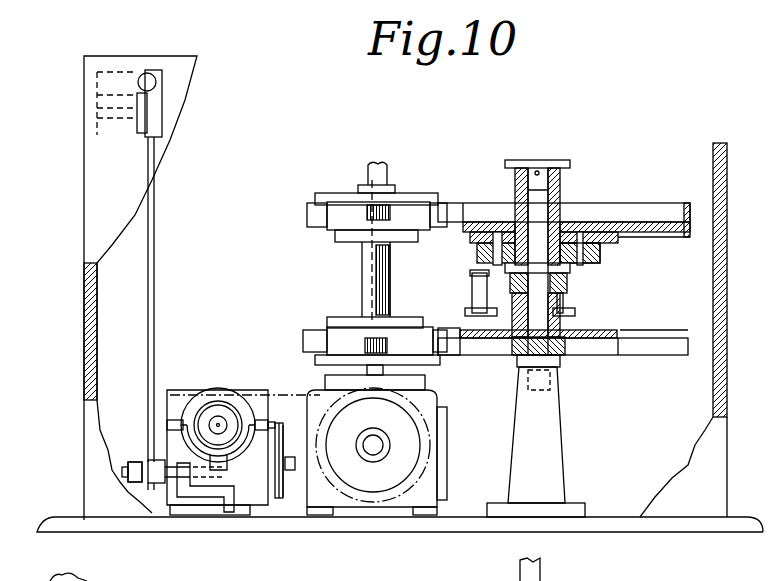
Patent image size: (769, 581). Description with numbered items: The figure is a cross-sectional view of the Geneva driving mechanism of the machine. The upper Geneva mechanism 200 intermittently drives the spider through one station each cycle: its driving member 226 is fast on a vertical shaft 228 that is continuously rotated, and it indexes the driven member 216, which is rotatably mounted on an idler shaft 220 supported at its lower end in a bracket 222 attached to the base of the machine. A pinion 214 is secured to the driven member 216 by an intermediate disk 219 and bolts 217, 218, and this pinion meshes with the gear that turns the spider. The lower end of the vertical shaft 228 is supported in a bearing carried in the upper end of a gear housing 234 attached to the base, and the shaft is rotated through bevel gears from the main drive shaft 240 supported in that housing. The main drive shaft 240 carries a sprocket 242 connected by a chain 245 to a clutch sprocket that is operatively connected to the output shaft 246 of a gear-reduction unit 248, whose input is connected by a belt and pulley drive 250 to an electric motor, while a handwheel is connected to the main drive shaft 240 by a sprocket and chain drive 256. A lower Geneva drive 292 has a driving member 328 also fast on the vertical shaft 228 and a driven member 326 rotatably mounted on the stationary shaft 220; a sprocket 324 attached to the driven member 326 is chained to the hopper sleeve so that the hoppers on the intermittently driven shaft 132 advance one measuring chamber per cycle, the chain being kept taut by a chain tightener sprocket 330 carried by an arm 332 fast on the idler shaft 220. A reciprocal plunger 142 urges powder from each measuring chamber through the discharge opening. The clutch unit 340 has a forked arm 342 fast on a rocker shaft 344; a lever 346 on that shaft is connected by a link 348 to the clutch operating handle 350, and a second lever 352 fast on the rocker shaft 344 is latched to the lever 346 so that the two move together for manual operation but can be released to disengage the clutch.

The intermittently driven shaft 132 is at (269, 567).
The reciprocal plunger 142 is at (544, 578).
The Geneva mechanism 200 is at (648, 197).
The pinion 214 is at (600, 258).
The driven member 216 is at (690, 232).
The bolt 217 is at (505, 263).
The bolt 218 is at (458, 232).
The intermediate disk 219 is at (618, 242).
The idler shaft 220 is at (542, 160).
The bracket 222 is at (565, 450).
The driving member 226 is at (408, 212).
The vertical shaft 228 is at (370, 168).
The gear housing 234 is at (437, 460).
The main drive shaft 240 is at (372, 440).
The sprocket 242 is at (408, 475).
The chain 245 is at (302, 483).
The output shaft 246 is at (195, 410).
The gear-reduction unit 248 is at (243, 393).
The belt and pulley drive 250 is at (283, 423).
The sprocket and chain drive 256 is at (417, 463).
The lower Geneva drive 292 is at (656, 317).
The sprocket 324 is at (567, 316).
The driven member 326 is at (652, 348).
The driving member 328 is at (345, 328).
The chain tightener sprocket 330 is at (465, 310).
The arm 332 is at (565, 287).
The clutch unit 340 is at (211, 451).
The forked arm 342 is at (226, 455).
The rocker shaft 344 is at (200, 475).
The lever 346 is at (138, 485).
The link 348 is at (155, 233).
The clutch operating handle 350 is at (147, 73).
The lever 352 is at (152, 502).